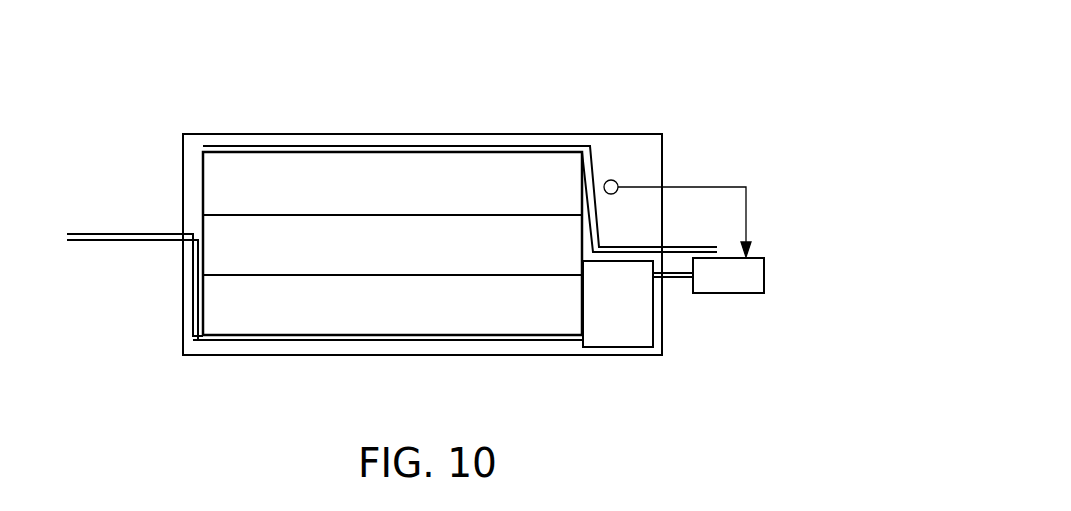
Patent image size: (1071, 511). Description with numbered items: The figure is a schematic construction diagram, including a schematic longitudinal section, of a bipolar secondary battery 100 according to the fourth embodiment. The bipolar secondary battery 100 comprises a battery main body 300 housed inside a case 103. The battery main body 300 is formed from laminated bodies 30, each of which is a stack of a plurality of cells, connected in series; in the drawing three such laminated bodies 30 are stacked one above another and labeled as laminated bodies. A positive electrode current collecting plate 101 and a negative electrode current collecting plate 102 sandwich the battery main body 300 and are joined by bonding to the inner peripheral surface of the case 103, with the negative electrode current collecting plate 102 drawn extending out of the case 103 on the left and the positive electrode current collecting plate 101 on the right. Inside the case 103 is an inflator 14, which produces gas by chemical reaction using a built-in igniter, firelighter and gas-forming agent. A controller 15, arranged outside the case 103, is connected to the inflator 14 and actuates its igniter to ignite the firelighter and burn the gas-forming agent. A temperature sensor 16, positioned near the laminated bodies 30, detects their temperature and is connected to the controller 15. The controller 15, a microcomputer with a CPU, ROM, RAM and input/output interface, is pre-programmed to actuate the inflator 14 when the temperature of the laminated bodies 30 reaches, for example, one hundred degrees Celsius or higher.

The bipolar secondary battery 100 is at (375, 194).
The case 103 is at (183, 138).
The battery main body 300 is at (403, 206).
The laminated body 30 is at (264, 242).
The negative electrode current collecting plate 102 is at (87, 233).
The positive electrode current collecting plate 101 is at (692, 246).
The inflator 14 is at (619, 335).
The controller 15 is at (703, 281).
The temperature sensor 16 is at (613, 181).